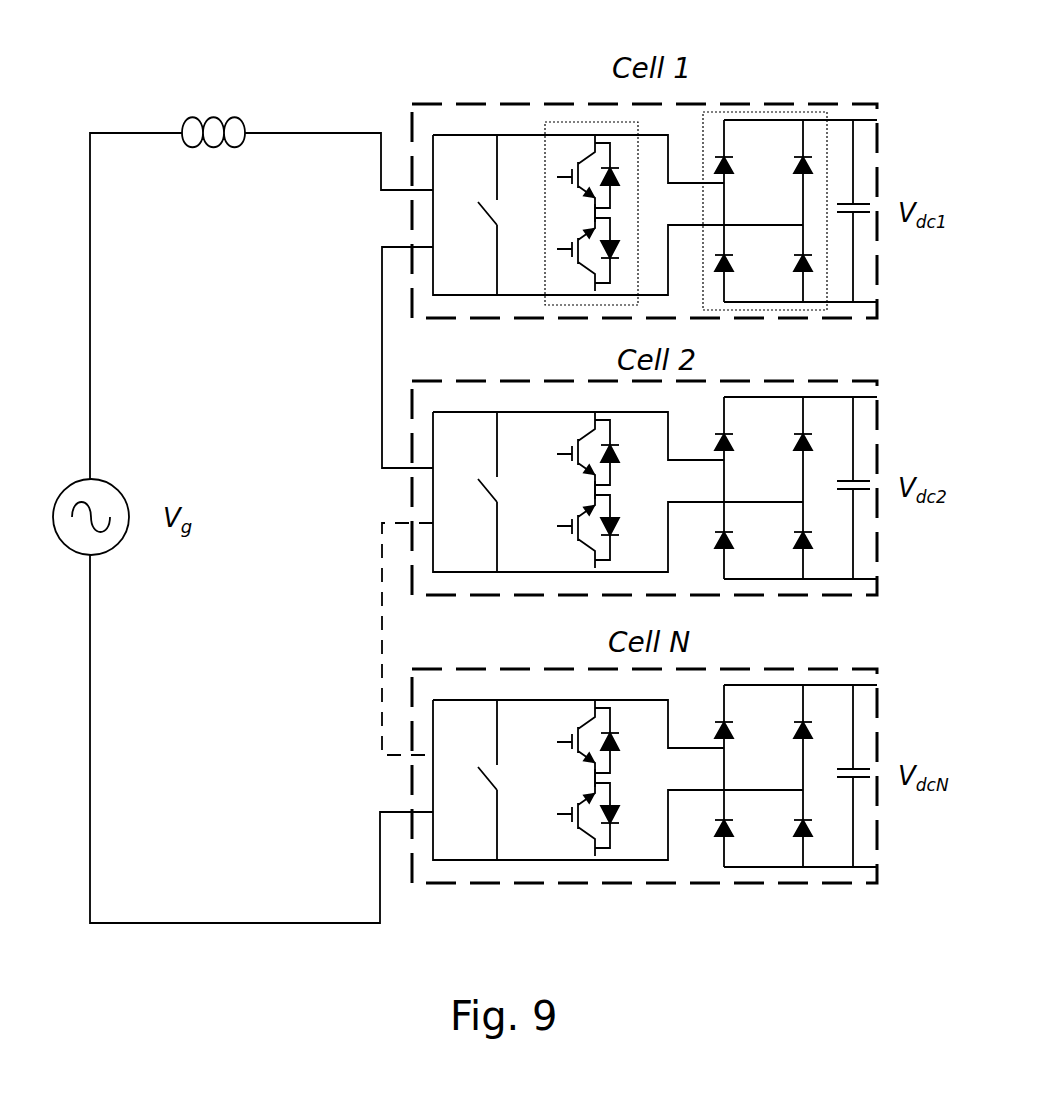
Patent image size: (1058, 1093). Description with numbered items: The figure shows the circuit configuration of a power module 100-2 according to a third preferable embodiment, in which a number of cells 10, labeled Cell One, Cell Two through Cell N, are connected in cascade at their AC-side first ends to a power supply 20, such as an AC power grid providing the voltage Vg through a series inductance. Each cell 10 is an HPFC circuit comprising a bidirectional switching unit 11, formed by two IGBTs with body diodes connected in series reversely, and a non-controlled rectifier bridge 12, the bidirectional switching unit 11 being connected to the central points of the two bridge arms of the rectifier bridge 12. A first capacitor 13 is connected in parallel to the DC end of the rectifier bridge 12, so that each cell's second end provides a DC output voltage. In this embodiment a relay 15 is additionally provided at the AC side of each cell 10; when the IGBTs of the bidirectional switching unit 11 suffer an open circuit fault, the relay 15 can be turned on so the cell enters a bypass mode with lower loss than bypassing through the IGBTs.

The power module 100-2 is at (223, 77).
The cell 10 is at (656, 180).
The bidirectional switching unit 11 is at (580, 122).
The non-controlled rectifier bridge 12 is at (757, 112).
The first capacitor 13 is at (864, 196).
The relay 15 is at (470, 212).
The power supply 20 is at (115, 472).